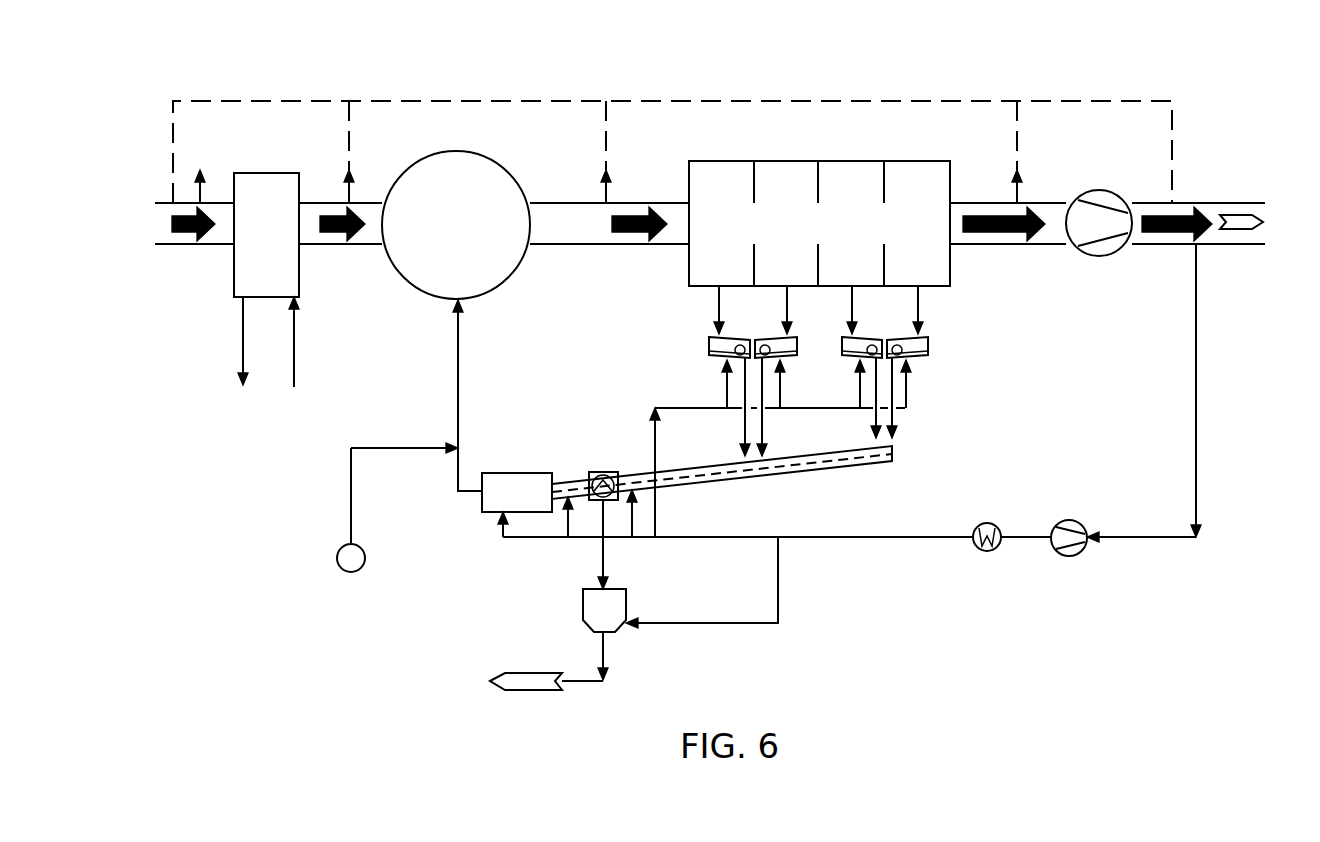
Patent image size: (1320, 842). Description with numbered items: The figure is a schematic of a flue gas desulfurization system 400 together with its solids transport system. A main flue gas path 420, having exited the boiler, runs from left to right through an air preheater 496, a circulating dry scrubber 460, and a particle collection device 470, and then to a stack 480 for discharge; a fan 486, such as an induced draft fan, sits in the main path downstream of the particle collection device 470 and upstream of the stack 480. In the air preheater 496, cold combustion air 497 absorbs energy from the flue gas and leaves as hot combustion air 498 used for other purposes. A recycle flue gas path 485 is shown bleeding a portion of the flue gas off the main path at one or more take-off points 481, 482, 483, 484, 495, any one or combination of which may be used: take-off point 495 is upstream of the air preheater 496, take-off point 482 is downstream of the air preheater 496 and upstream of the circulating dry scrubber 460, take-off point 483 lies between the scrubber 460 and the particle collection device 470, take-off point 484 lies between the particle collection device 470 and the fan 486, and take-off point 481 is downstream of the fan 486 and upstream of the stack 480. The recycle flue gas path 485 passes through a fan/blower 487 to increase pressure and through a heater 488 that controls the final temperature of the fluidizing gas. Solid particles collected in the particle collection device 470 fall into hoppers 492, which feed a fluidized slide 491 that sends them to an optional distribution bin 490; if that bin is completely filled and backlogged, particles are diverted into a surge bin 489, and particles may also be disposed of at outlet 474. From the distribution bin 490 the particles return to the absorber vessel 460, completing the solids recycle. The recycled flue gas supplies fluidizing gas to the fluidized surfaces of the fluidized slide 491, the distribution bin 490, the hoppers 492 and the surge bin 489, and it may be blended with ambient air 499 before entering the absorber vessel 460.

The flue gas desulfurization system 400 is at (305, 68).
The main flue gas path 420 is at (175, 228).
The circulating dry scrubber 460 is at (456, 225).
The particle collection device 470 is at (819, 223).
The disposal of solid particles 474 is at (535, 670).
The stack 480 is at (1272, 215).
The take-off point 481 is at (1200, 247).
The take-off point 482 is at (350, 202).
The take-off point 483 is at (603, 201).
The take-off point 484 is at (1022, 201).
The recycle flue gas path 485 is at (727, 101).
The fan 486 is at (1099, 223).
The fan/blower 487 is at (1072, 518).
The heater 488 is at (988, 522).
The surge bin 489 is at (583, 612).
The distribution bin 490 is at (517, 492).
The fluidized slide 491 is at (813, 458).
The hoppers 492 is at (708, 343).
The take-off point 495 is at (205, 203).
The air preheater 496 is at (266, 235).
The cold combustion air 497 is at (298, 357).
The hot combustion air 498 is at (243, 357).
The ambient air 499 is at (337, 565).